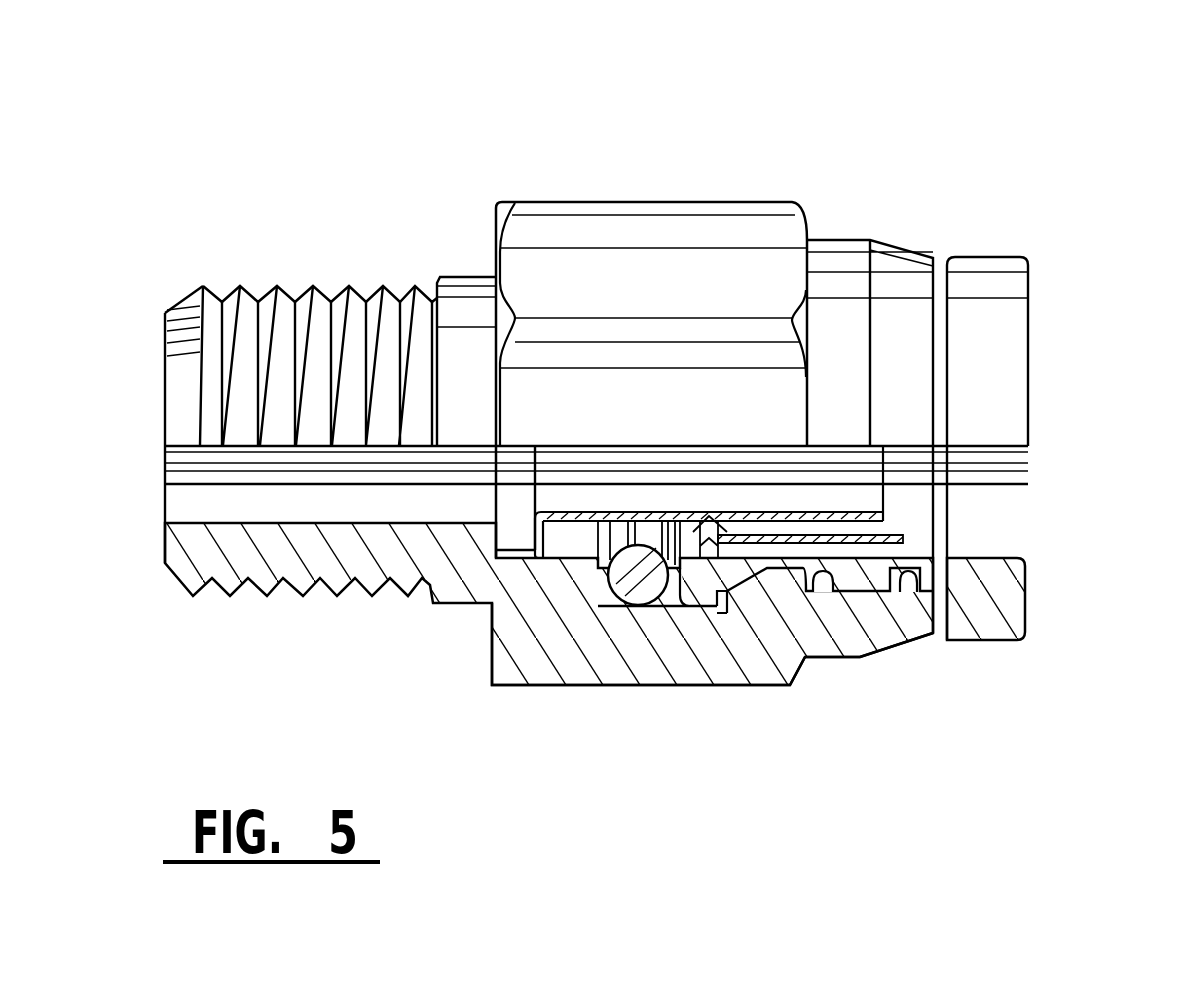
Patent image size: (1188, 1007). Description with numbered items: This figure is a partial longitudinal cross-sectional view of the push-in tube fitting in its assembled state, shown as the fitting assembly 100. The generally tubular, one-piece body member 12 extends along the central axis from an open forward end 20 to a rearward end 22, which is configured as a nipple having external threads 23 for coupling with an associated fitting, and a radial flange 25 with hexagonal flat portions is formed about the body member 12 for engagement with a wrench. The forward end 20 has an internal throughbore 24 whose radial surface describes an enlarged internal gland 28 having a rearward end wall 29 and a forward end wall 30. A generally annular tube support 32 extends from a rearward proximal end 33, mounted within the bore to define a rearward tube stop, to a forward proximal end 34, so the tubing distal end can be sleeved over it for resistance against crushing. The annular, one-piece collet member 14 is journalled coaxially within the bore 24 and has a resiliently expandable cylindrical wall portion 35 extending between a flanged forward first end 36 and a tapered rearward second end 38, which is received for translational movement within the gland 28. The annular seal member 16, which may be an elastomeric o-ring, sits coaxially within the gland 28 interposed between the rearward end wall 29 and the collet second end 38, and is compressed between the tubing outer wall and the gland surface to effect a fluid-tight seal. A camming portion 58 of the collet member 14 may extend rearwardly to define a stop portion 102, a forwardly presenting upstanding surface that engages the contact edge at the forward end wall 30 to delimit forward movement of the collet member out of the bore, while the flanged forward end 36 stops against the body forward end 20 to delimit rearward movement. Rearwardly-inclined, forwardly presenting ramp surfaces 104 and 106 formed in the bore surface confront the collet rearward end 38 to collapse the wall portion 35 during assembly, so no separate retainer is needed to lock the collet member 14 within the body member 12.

The fitting assembly 100 is at (278, 688).
The rearward end 22 is at (162, 358).
The external threads 23 is at (351, 285).
The body member 12 is at (496, 246).
The radial flange 25 is at (647, 202).
The tube support 32 is at (738, 483).
The forward proximal end 34 is at (884, 467).
The wall portion 35 is at (915, 517).
The forward first end 36 is at (1027, 600).
The collet member 14 is at (993, 641).
The forward end 20 is at (942, 595).
The ramp surface 104 is at (903, 582).
The ramp surface 106 is at (828, 592).
The throughbore 24 is at (846, 602).
The camming portion 58 is at (727, 590).
The forward end wall 30 is at (747, 588).
The stop portion 102 is at (716, 600).
The internal gland 28 is at (677, 603).
The rearward second end 38 is at (625, 603).
The seal member 16 is at (610, 600).
The rearward end wall 29 is at (615, 593).
The rearward proximal end 33 is at (561, 538).